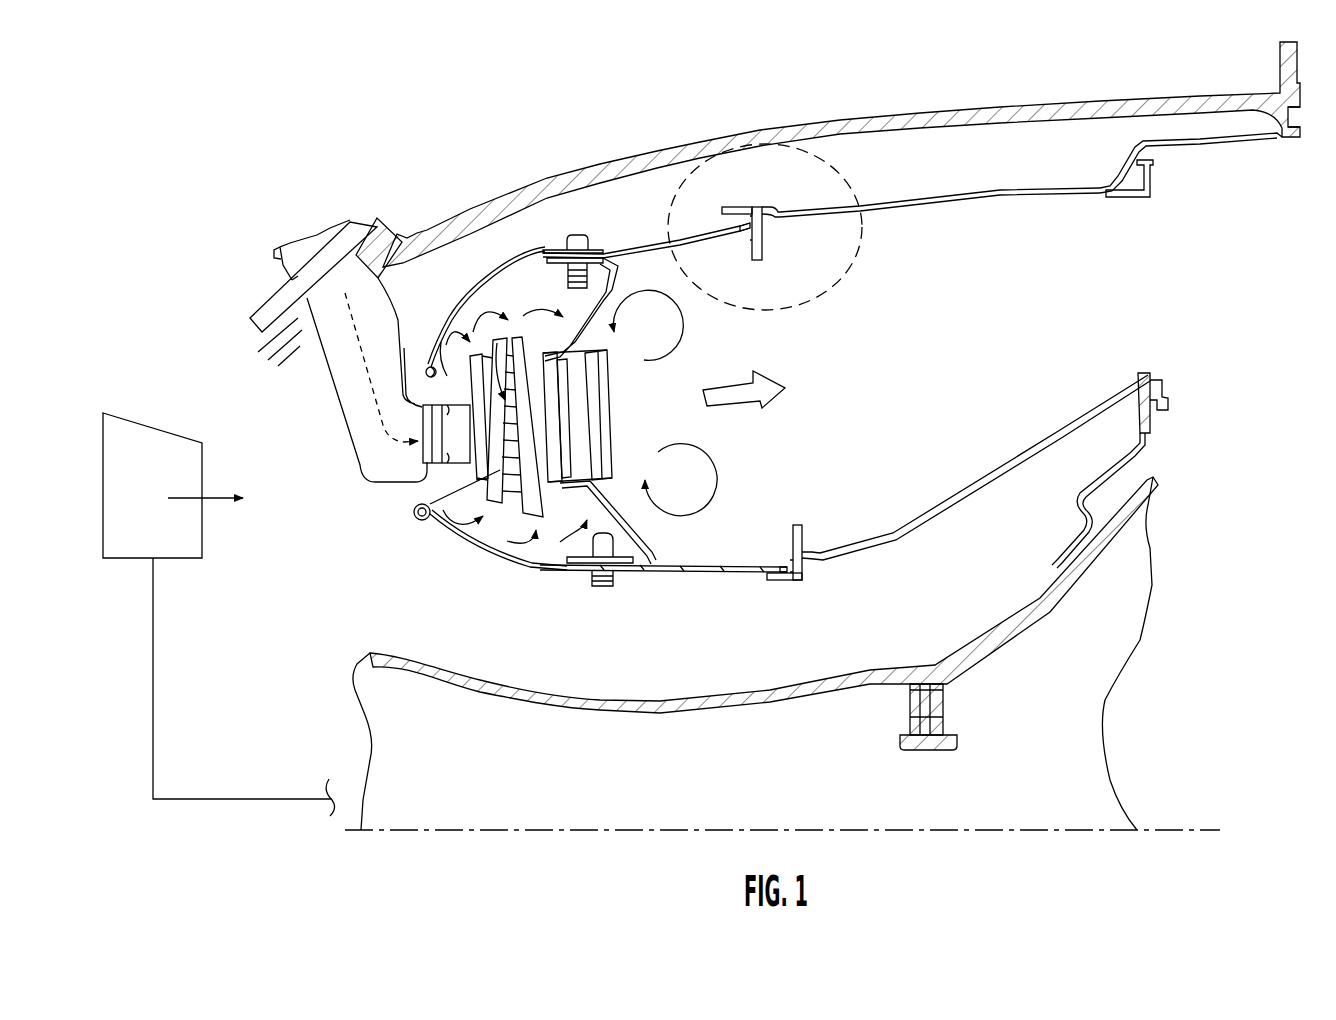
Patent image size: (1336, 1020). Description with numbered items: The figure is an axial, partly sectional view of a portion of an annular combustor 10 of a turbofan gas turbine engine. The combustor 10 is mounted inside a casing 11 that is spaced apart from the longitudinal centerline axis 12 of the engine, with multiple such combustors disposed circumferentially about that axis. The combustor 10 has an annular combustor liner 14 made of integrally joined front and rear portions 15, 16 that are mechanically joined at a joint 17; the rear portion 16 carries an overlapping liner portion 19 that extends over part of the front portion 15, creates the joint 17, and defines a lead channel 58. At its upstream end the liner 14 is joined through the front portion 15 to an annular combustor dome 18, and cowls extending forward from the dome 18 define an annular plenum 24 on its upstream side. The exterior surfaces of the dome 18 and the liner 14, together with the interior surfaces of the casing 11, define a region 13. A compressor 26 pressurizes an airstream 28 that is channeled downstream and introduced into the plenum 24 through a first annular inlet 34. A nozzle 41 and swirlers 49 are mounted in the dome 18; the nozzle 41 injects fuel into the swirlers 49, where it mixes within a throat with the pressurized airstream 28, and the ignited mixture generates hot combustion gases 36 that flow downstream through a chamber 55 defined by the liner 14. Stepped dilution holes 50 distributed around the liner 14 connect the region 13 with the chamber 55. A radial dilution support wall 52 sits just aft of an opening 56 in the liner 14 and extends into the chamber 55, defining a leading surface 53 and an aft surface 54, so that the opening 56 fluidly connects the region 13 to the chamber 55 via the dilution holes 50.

The annular combustor 10 is at (868, 152).
The casing 11 is at (550, 178).
The centerline axis 12 is at (920, 830).
The region 13 is at (956, 171).
The annular combustor liner 14 is at (780, 228).
The front portion 15 is at (683, 231).
The rear portion 16 is at (934, 200).
The joint 17 is at (767, 200).
The annular combustor dome 18 is at (495, 283).
The overlapping liner portion 19 is at (737, 207).
The annular plenum 24 is at (515, 404).
The compressor 26 is at (153, 533).
The airstream 28 is at (430, 495).
The first annular inlet 34 is at (430, 396).
The hot combustion gases 36 is at (735, 408).
The nozzle 41 is at (455, 405).
The swirlers 49 is at (418, 512).
The dilution holes 50 is at (717, 190).
The radial dilution support wall 52 is at (758, 256).
The leading surface 53 is at (750, 248).
The aft surface 54 is at (760, 250).
The chamber 55 is at (915, 346).
The opening 56 is at (748, 232).
The lead channel 58 is at (770, 570).